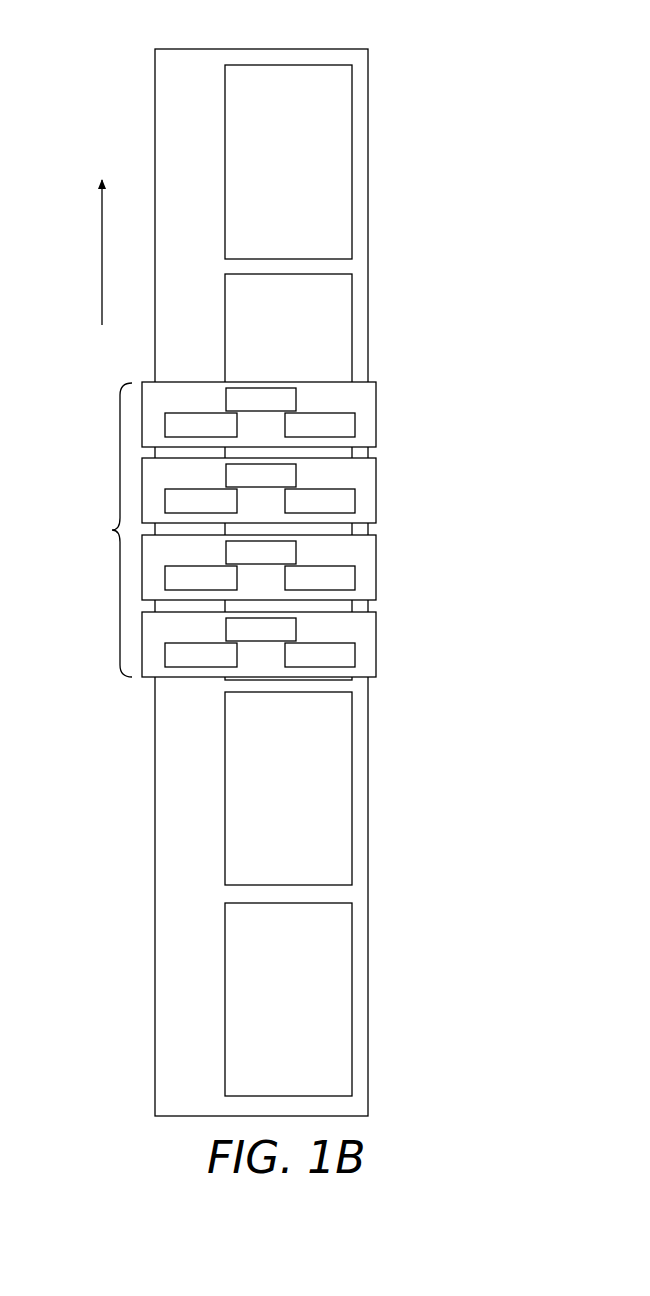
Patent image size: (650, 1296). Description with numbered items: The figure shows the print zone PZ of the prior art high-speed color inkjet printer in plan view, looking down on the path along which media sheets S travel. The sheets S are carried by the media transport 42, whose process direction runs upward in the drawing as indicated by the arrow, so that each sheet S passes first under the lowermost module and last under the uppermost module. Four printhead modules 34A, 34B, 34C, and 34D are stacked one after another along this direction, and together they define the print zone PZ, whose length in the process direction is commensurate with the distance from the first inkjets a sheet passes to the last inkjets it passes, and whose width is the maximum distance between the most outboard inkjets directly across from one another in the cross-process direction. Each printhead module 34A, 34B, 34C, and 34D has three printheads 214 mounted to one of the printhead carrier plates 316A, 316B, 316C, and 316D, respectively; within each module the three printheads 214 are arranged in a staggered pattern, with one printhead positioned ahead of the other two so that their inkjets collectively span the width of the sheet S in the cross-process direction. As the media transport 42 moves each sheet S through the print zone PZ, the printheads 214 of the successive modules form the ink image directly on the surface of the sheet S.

The printhead 214 is at (260, 527).
The printhead carrier plate 316A is at (377, 625).
The printhead carrier plate 316B is at (377, 548).
The printhead carrier plate 316C is at (377, 471).
The printhead carrier plate 316D is at (377, 395).
The printhead module 34A is at (320, 641).
The printhead module 34B is at (320, 564).
The printhead module 34C is at (320, 487).
The printhead module 34D is at (321, 411).
The media sheet S is at (352, 173).
The media transport 42 is at (146, 287).
The print zone PZ is at (107, 530).